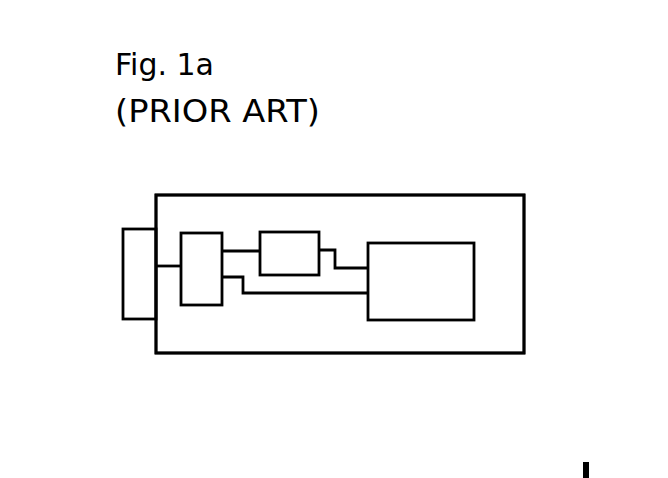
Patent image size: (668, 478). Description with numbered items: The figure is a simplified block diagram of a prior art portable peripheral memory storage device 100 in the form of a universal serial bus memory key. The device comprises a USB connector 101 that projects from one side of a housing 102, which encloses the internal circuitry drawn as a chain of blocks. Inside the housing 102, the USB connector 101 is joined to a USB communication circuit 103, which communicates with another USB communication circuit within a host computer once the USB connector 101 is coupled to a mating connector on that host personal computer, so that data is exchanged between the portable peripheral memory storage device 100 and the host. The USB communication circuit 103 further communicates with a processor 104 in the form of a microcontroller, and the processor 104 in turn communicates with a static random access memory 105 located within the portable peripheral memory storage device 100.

The portable peripheral memory storage device 100 is at (492, 165).
The USB connector 101 is at (135, 288).
The housing 102 is at (525, 275).
The USB communication circuit 103 is at (206, 288).
The processor 104 is at (302, 262).
The static random access memory 105 is at (443, 278).